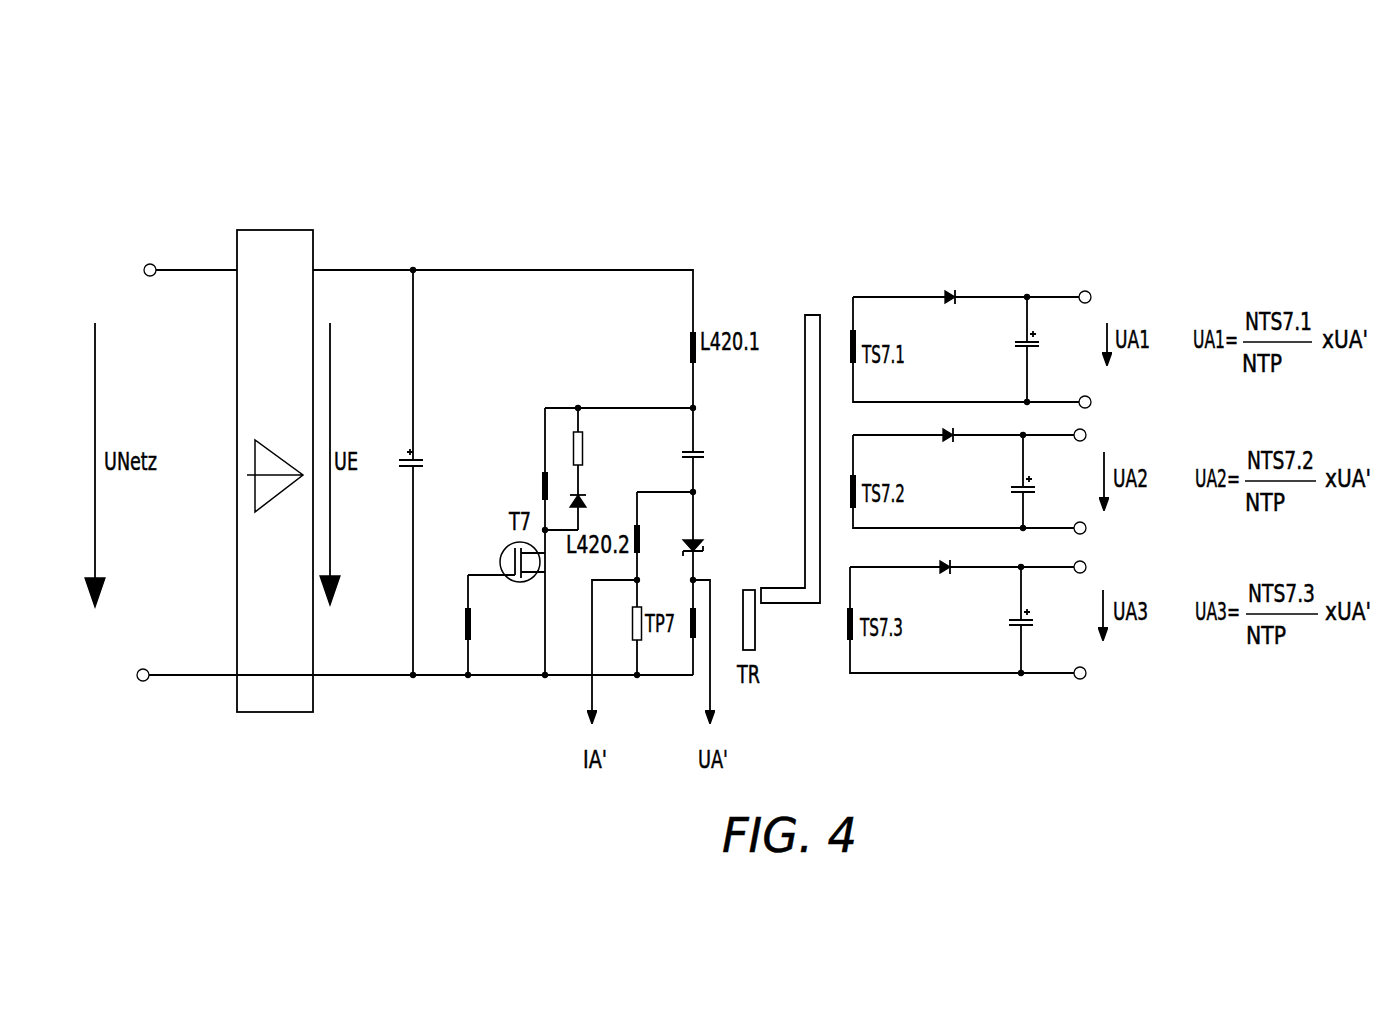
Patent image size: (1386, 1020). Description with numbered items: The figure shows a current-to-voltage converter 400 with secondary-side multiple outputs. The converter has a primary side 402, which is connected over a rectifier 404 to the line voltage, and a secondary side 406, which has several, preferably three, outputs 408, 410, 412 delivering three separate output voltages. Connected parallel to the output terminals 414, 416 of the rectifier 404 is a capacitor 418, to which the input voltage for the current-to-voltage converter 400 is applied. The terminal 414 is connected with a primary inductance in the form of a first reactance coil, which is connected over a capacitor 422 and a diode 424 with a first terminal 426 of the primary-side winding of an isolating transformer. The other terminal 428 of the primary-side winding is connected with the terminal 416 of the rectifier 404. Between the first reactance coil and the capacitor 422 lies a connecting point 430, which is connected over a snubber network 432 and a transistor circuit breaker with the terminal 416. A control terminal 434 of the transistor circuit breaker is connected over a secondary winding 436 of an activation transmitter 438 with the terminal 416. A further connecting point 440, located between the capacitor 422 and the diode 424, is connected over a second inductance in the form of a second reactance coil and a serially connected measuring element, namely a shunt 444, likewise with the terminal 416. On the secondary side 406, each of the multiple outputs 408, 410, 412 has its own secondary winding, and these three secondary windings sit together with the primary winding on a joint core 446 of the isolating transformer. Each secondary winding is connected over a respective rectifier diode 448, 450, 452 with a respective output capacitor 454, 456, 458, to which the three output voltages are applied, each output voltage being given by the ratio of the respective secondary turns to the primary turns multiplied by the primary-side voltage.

The current-to-voltage converter 400 is at (792, 165).
The primary side 402 is at (636, 248).
The rectifier 404 is at (278, 244).
The secondary side 406 is at (1082, 254).
The output 408 is at (1088, 380).
The output 410 is at (1088, 520).
The output 412 is at (1088, 657).
The output terminal 414 is at (417, 268).
The output terminal 416 is at (412, 677).
The capacitor 418 is at (421, 453).
The capacitor 422 is at (682, 455).
The diode 424 is at (704, 549).
The first terminal 426 is at (712, 586).
The terminal 428 is at (683, 678).
The connecting point 430 is at (700, 408).
The snubber network 432 is at (555, 423).
The control terminal 434 is at (466, 573).
The secondary winding 436 is at (480, 618).
The activation transmitter 438 is at (450, 622).
The connecting point 440 is at (700, 492).
The shunt 444 is at (575, 644).
The joint core 446 is at (756, 628).
The rectifier diode 448 is at (948, 302).
The rectifier diode 450 is at (946, 440).
The rectifier diode 452 is at (943, 572).
The output capacitor 454 is at (1020, 342).
The output capacitor 456 is at (1012, 488).
The output capacitor 458 is at (1010, 620).